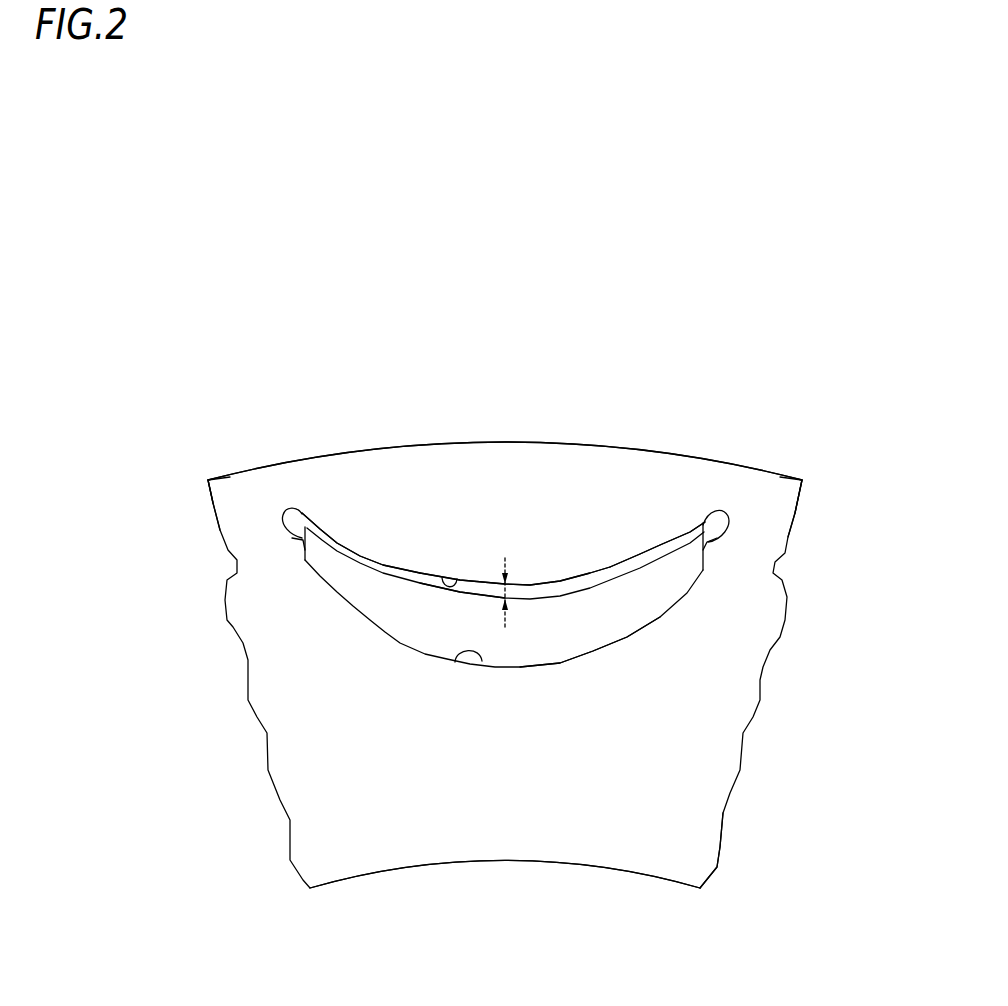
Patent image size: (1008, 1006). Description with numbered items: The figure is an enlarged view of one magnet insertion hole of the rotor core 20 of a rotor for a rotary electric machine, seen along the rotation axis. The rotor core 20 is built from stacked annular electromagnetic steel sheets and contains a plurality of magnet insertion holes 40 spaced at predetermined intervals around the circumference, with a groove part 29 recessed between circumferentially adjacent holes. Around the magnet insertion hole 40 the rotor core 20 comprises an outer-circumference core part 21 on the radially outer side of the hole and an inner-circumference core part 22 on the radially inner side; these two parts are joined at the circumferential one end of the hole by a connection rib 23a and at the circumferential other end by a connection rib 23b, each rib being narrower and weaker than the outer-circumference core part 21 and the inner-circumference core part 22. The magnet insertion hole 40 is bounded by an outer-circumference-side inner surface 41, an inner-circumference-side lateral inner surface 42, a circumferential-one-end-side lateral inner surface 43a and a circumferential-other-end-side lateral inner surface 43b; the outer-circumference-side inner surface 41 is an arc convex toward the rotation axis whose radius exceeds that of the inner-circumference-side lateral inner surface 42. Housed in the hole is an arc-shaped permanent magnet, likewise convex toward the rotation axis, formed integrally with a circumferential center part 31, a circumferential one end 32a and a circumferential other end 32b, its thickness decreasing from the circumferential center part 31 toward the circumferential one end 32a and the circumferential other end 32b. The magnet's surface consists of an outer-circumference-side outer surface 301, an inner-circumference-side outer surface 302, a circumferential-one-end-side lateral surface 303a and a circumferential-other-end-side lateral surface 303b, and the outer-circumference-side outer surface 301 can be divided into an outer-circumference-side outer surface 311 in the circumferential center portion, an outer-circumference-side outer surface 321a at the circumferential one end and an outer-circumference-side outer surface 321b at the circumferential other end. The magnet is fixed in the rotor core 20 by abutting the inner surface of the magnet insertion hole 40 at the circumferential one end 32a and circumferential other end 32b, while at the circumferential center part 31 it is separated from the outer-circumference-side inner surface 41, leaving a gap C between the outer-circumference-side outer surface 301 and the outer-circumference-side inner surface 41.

The rotor core 20 is at (797, 288).
The outer-circumference core part 21 is at (450, 473).
The inner-circumference core part 22 is at (680, 803).
The connection rib 23a is at (738, 492).
The connection rib 23b is at (277, 492).
The groove part 29 is at (203, 500).
The outer-circumference-side outer surface 301 is at (737, 347).
The outer-circumference-side outer surface 311 is at (533, 585).
The outer-circumference-side outer surface 321a is at (652, 547).
The outer-circumference-side outer surface 321b is at (382, 563).
The circumferential center part 31 is at (520, 660).
The inner-circumference-side outer surface 302 is at (586, 660).
The circumferential one end 32a is at (693, 560).
The circumferential other end 32b is at (320, 557).
The circumferential-one-end-side lateral inner surface 43a is at (728, 537).
The circumferential-other-end-side lateral inner surface 43b is at (283, 528).
The circumferential-one-end-side lateral surface 303a is at (718, 538).
The circumferential-other-end-side lateral surface 303b is at (302, 538).
The magnet insertion hole 40 is at (482, 592).
The outer-circumference-side inner surface 41 is at (458, 575).
The inner-circumference-side lateral inner surface 42 is at (481, 665).
The gap C is at (514, 598).